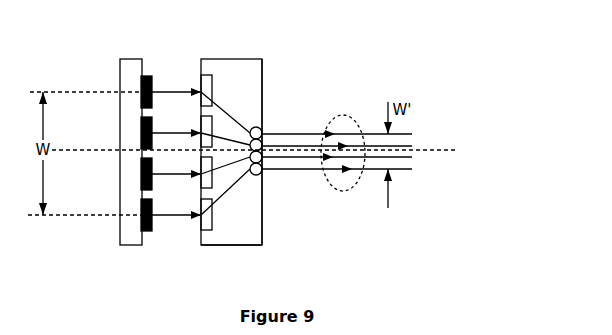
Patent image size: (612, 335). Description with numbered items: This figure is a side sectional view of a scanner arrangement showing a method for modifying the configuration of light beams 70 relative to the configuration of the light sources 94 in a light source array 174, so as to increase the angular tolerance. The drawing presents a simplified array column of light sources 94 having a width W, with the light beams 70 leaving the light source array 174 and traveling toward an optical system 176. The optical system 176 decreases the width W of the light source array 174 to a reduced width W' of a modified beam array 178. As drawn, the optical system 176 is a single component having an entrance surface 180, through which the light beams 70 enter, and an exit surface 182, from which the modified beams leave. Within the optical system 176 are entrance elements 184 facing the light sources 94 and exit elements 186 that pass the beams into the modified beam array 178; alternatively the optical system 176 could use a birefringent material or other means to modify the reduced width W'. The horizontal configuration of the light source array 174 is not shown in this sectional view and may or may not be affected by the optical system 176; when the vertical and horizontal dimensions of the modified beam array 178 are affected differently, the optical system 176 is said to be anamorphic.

The light source array 174 is at (130, 115).
The light sources 94 is at (142, 74).
The light beams 70 is at (163, 90).
The optical system 176 is at (241, 70).
The entrance elements 184 is at (202, 75).
The exit surface 182 is at (263, 70).
The exit elements 186 is at (262, 128).
The modified beam array 178 is at (355, 120).
The entrance surface 180 is at (202, 244).